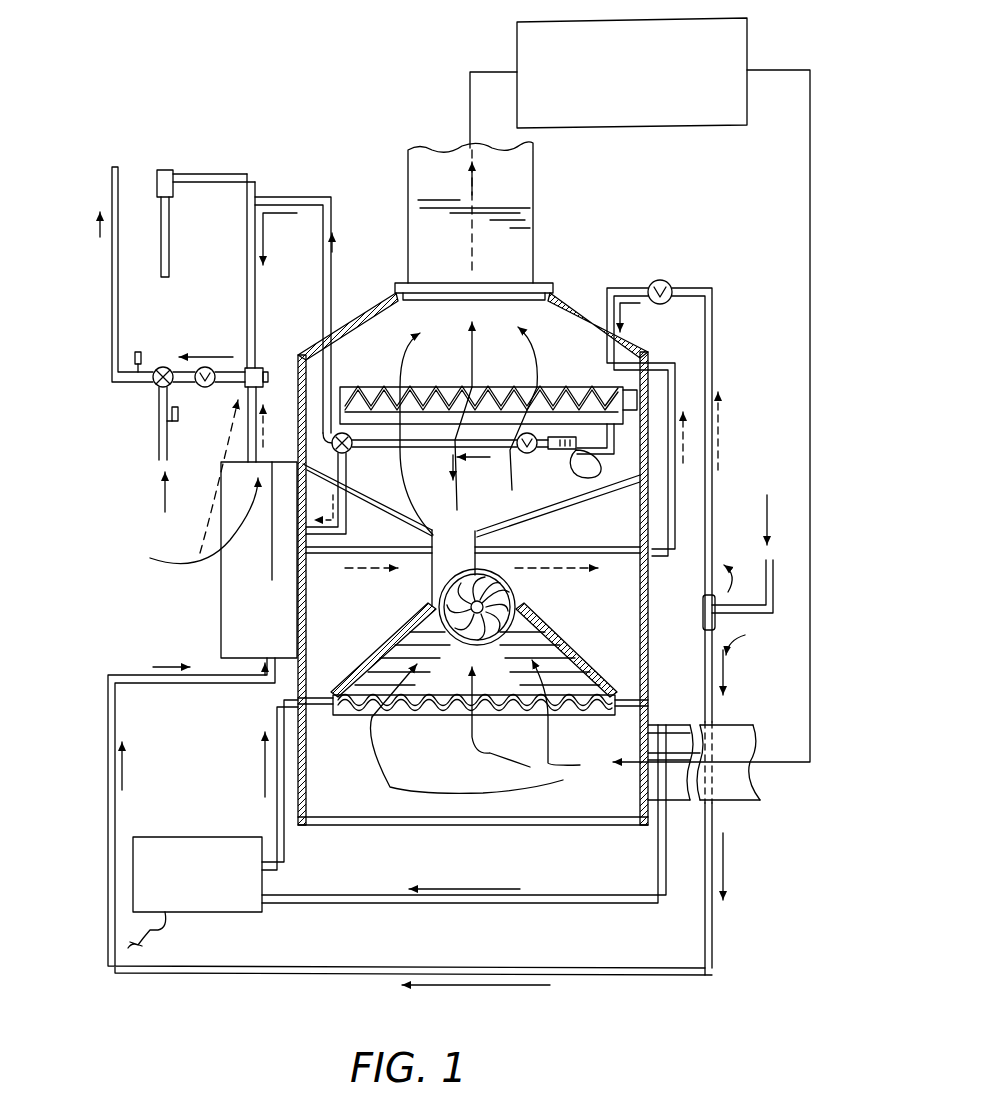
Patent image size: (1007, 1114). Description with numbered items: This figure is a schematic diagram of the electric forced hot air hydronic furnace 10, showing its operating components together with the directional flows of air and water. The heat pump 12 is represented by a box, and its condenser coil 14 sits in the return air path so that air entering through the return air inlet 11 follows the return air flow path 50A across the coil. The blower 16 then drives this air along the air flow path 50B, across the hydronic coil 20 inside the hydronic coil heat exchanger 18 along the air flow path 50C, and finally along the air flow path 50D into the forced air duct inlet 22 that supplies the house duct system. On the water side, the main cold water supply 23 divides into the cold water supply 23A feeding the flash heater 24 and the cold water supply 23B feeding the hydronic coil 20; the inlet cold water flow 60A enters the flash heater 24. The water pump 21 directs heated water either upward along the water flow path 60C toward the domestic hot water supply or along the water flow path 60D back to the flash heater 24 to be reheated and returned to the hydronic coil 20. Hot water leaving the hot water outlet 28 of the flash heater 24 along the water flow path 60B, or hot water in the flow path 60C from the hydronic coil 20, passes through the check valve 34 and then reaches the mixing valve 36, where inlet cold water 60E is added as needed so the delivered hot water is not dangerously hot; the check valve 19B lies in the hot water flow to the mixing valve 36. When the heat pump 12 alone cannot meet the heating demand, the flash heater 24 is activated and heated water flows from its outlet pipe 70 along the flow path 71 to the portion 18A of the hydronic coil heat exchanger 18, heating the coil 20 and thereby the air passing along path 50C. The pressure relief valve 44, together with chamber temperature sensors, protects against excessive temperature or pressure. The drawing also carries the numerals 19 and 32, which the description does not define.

The furnace 10 is at (352, 108).
The return air inlet 11 is at (622, 807).
The heat pump 12 is at (215, 897).
The condenser coil 14 is at (428, 716).
The blower 16 is at (515, 592).
The hydronic coil heat exchanger 18 is at (412, 387).
The hydronic coil heat exchanger 18A is at (612, 382).
The water pump 19 is at (660, 280).
The check valve 19B is at (228, 426).
The hydronic coil 20 is at (490, 387).
The water pump 21 is at (567, 467).
The forced air duct inlet 22 is at (505, 294).
The main cold water supply 23 is at (770, 578).
The cold water supply to flash heater 23A is at (745, 635).
The cold water supply to hydronic coil 23B is at (728, 583).
The flash heater 24 is at (237, 598).
The hot water outlet 28 is at (262, 476).
The valve 32 is at (152, 395).
The check valve 34 is at (260, 368).
The mixing valve 36 is at (168, 367).
The pressure relief valve 44 is at (165, 170).
The return air flow path 50A is at (478, 745).
The air flow path 50B is at (465, 522).
The air flow path 50C is at (410, 340).
The air flow path 50D is at (478, 198).
The inlet cold water flow 60A is at (173, 660).
The water flow path 60B is at (179, 489).
The water flow path 60C is at (340, 258).
The water flow path 60D is at (350, 492).
The inlet cold water 60E is at (100, 253).
The pipe 70 is at (312, 556).
The flow path 71 is at (360, 568).